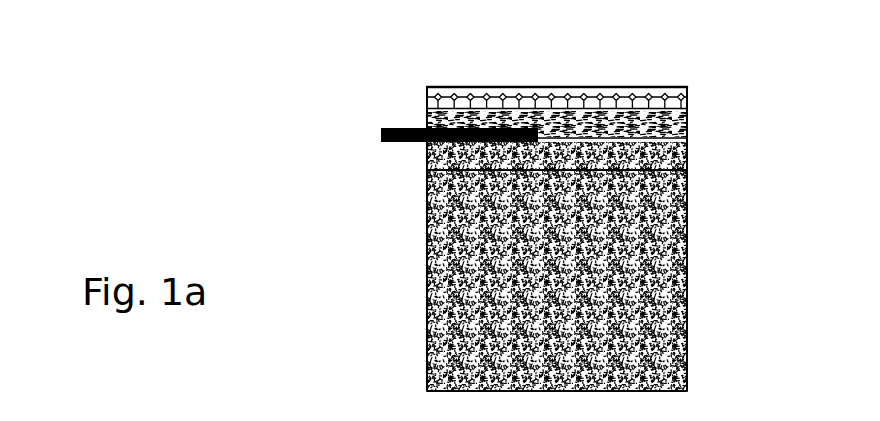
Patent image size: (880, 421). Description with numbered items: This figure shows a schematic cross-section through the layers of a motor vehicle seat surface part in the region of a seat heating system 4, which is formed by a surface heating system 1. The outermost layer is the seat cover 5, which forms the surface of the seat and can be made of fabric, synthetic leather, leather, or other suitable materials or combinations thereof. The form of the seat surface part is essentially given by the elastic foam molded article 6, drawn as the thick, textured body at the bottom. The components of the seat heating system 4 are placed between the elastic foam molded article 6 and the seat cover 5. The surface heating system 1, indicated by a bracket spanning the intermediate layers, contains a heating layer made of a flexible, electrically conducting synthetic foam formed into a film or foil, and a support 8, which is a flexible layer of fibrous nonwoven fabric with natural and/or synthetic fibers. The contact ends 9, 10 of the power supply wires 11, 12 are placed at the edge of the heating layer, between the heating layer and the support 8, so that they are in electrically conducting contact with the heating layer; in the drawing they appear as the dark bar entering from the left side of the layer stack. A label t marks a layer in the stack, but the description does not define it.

The surface heating system 1 is at (593, 124).
The seat heating system 4 is at (412, 162).
The seat cover 5 is at (651, 90).
The elastic foam molded article 6 is at (689, 338).
The support 8 is at (666, 157).
The contact end 9 is at (488, 128).
The contact end 10 is at (461, 72).
The power supply wire 11 is at (381, 133).
The power supply wire 12 is at (256, 90).
The layer thickness t is at (577, 130).